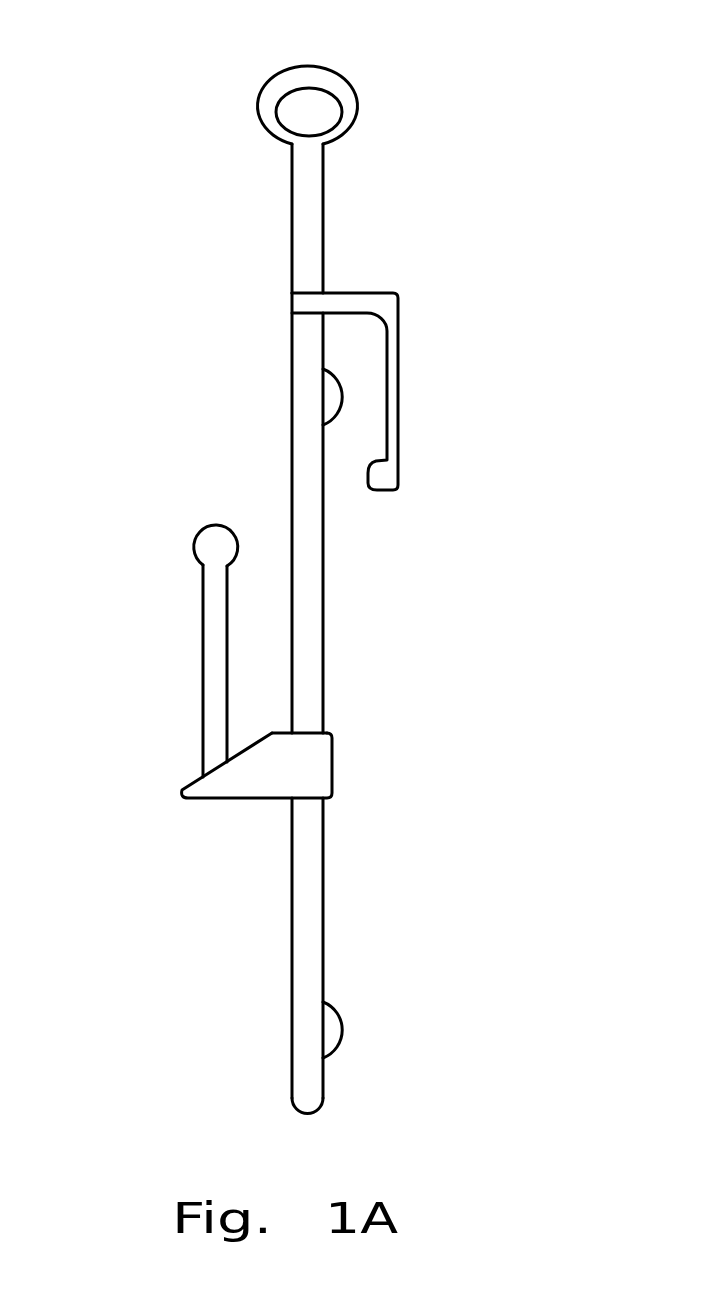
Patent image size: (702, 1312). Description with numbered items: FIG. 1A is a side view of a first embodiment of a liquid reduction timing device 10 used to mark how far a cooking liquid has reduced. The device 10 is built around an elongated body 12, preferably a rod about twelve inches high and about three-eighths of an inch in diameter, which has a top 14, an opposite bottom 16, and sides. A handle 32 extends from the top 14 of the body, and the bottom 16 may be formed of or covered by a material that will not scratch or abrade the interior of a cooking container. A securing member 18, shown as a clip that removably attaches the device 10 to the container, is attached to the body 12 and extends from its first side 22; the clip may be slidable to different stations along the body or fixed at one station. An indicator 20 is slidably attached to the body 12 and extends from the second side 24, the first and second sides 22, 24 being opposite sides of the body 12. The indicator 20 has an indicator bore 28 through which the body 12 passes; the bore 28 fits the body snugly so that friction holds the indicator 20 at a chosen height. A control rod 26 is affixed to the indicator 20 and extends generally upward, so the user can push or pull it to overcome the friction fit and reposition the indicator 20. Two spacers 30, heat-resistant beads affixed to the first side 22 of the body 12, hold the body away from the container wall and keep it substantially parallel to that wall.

The liquid reduction timing device 10 is at (130, 249).
The elongated body 12 is at (292, 412).
The top 14 is at (328, 151).
The bottom 16 is at (297, 1108).
The securing member 18 is at (398, 430).
The indicator 20 is at (182, 792).
The first side 22 is at (325, 897).
The second side 24 is at (292, 898).
The control rod 26 is at (203, 602).
The indicator bore 28 is at (305, 732).
The spacer 30 is at (338, 378).
The handle 32 is at (322, 72).